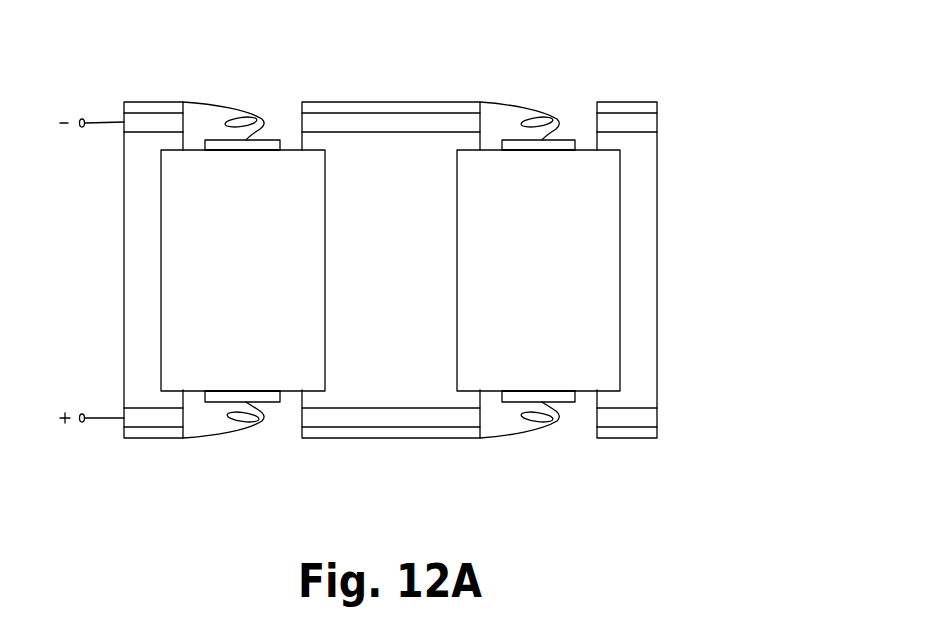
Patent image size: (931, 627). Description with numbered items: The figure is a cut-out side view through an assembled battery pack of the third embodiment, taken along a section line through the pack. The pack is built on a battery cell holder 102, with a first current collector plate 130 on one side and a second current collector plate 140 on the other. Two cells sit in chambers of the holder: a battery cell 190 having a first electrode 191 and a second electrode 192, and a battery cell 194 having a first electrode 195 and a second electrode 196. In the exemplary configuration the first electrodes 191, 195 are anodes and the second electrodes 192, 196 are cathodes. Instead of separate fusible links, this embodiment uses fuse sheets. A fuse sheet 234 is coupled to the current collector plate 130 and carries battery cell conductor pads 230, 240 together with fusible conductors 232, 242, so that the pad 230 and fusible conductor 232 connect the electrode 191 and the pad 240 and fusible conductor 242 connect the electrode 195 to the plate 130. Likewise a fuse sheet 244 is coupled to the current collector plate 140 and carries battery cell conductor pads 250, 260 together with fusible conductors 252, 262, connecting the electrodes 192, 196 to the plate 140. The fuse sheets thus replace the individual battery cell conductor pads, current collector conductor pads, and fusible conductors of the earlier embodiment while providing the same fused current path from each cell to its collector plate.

The battery cell holder 102 is at (658, 243).
The first current collector plate 130 is at (124, 129).
The second current collector plate 140 is at (124, 408).
The battery cell 190 is at (260, 276).
The first electrode 191 is at (241, 150).
The second electrode 192 is at (233, 391).
The battery cell 194 is at (557, 276).
The first electrode 195 is at (536, 150).
The second electrode 196 is at (532, 391).
The battery cell conductor pad 230 is at (270, 134).
The fusible conductor 232 is at (214, 108).
The fuse sheet 234 is at (170, 102).
The battery cell conductor pad 240 is at (565, 138).
The fusible conductor 242 is at (519, 108).
The fuse sheet 244 is at (153, 439).
The battery cell conductor pad 250 is at (271, 402).
The fusible conductor 252 is at (216, 438).
The battery cell conductor pad 260 is at (567, 402).
The fusible conductor 262 is at (507, 438).